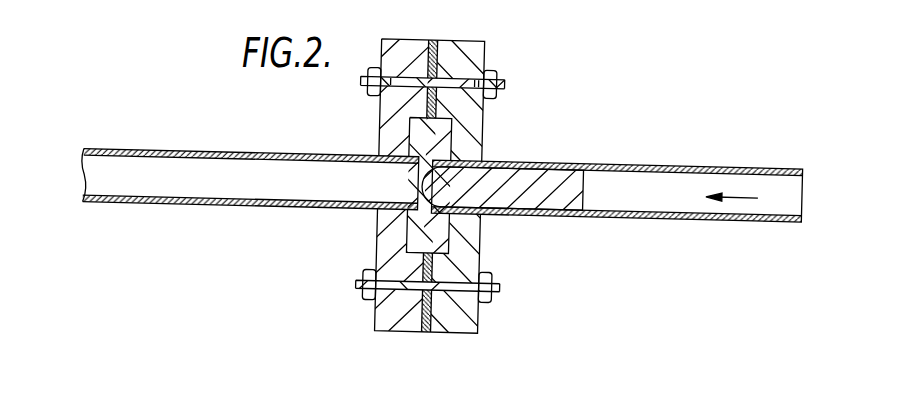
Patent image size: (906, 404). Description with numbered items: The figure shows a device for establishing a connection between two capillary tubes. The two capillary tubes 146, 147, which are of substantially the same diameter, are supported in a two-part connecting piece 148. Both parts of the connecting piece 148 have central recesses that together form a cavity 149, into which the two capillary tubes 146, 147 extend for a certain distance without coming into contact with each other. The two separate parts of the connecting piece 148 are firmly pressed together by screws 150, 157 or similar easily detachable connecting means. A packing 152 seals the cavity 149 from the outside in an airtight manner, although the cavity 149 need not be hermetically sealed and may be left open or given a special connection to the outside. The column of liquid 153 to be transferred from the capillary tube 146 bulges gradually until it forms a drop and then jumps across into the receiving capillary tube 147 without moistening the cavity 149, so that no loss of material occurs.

The capillary tube 146 is at (680, 209).
The capillary tube 147 is at (255, 189).
The two-part connecting piece 148 is at (458, 332).
The cavity 149 is at (408, 222).
The screw 150 is at (489, 298).
The packing 152 is at (423, 334).
The column of liquid 153 is at (533, 180).
The upper bolt and nuts 157 is at (498, 83).